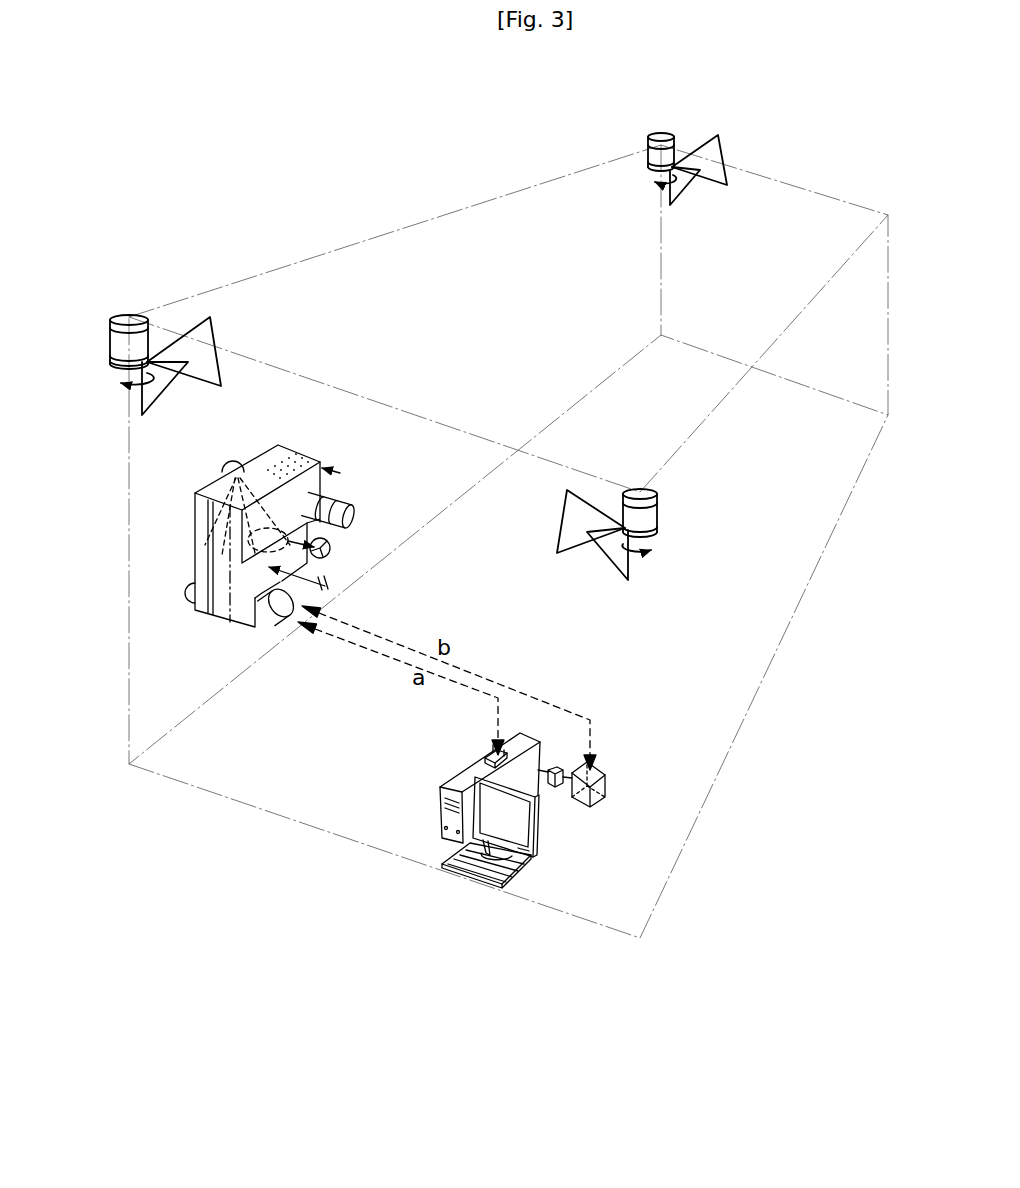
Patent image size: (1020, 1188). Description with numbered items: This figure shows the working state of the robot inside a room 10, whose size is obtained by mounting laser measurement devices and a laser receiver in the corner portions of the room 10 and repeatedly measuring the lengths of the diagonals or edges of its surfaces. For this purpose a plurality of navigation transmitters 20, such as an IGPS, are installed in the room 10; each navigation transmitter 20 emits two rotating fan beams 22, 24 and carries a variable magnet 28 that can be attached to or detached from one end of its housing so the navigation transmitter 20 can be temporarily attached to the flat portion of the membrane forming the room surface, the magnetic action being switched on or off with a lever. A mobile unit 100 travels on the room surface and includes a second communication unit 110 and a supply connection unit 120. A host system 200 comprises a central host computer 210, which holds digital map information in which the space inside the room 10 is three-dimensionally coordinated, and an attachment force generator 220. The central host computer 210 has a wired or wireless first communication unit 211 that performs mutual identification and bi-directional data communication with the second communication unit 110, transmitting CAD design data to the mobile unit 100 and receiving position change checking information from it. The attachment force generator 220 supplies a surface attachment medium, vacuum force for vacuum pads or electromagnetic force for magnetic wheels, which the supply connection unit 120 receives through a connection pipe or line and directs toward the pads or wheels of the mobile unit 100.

The room 10 is at (500, 197).
The navigation transmitter 20 is at (400, 310).
The rotating fan beam 22 is at (163, 393).
The rotating fan beam 24 is at (171, 367).
The variable magnet 28 is at (130, 318).
The mobile unit 100 is at (249, 577).
The second communication unit 110 is at (257, 446).
The supply connection unit 120 is at (240, 617).
The host system 200 is at (497, 877).
The central host computer 210 is at (461, 861).
The first communication unit 211 is at (487, 757).
The attachment force generator 220 is at (600, 807).